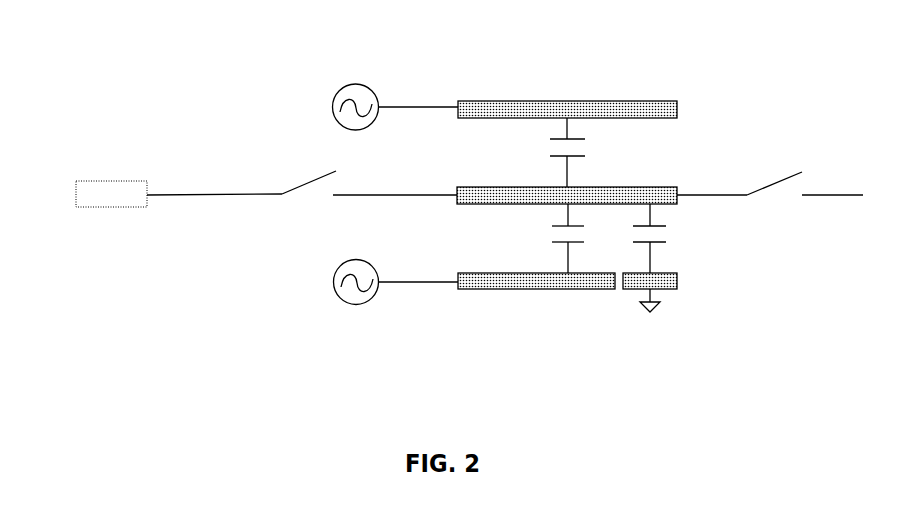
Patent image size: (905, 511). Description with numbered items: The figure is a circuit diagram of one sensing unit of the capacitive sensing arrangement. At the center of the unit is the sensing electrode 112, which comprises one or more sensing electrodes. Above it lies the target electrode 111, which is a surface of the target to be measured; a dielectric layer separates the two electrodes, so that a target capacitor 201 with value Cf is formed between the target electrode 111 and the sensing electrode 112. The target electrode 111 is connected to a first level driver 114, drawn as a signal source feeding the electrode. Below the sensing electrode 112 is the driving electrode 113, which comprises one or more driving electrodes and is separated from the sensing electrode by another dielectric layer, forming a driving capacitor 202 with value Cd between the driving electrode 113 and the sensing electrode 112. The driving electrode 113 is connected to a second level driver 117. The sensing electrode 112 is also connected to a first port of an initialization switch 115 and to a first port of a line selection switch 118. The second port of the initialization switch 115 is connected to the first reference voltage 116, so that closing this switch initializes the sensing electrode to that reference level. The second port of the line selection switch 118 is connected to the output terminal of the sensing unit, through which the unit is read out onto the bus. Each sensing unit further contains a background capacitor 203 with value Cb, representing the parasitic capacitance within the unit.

The target electrode 111 is at (522, 101).
The sensing electrode 112 is at (663, 187).
The driving electrode 113 is at (507, 289).
The first level driver 114 is at (367, 86).
The initialization switch 115 is at (315, 196).
The first reference voltage 116 is at (130, 207).
The second level driver 117 is at (364, 304).
The line selection switch 118 is at (780, 177).
The target capacitor 201 is at (582, 146).
The driving capacitor 202 is at (587, 237).
The background capacitor 203 is at (673, 236).